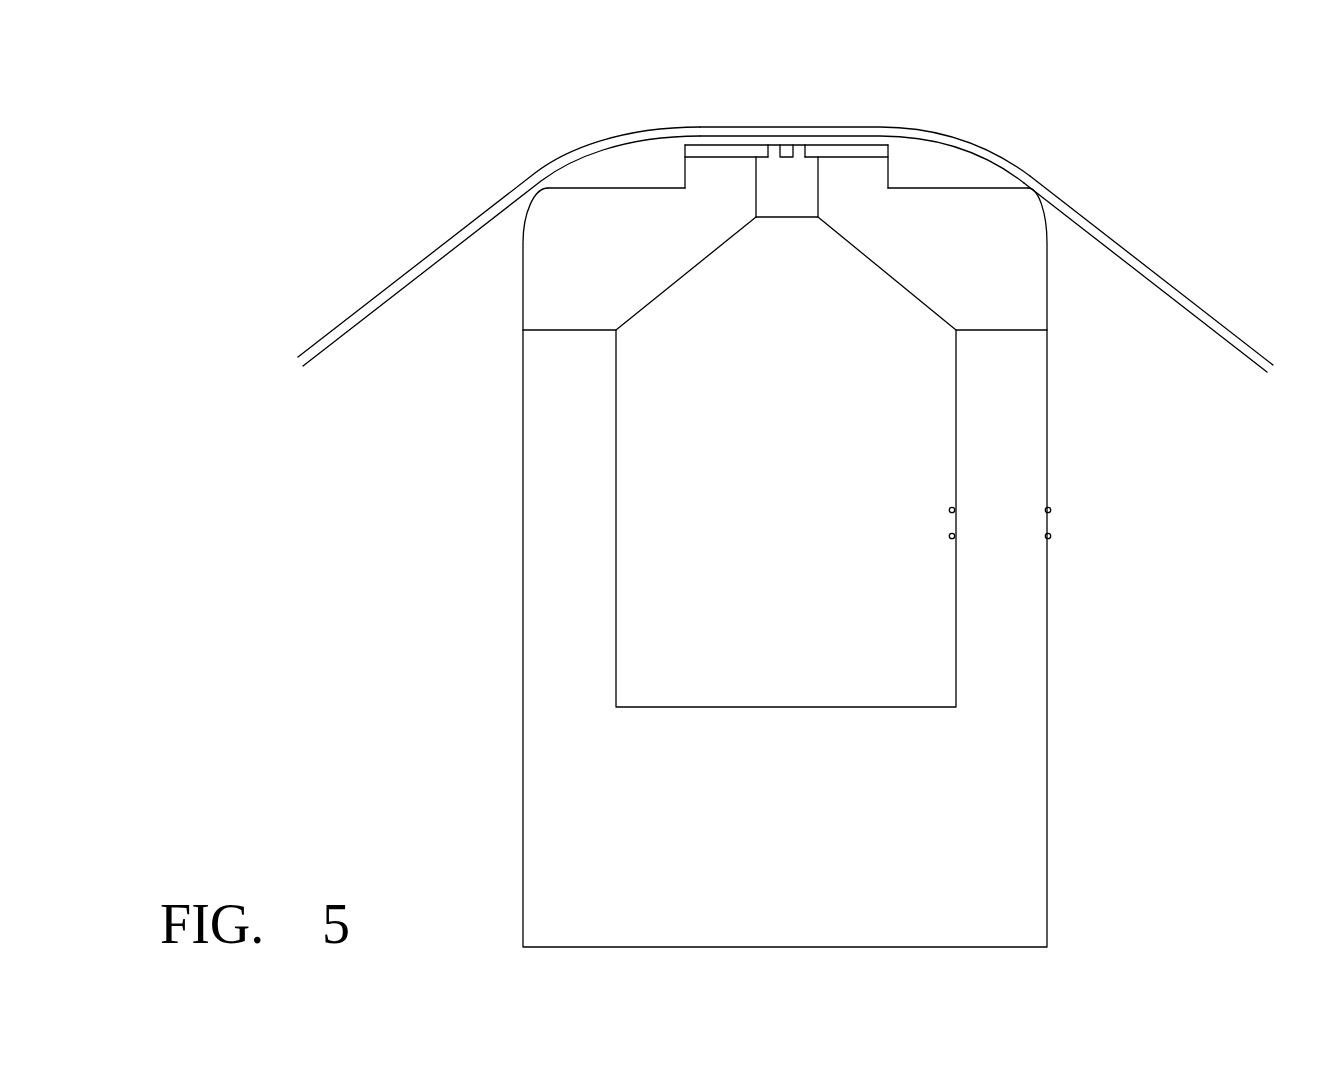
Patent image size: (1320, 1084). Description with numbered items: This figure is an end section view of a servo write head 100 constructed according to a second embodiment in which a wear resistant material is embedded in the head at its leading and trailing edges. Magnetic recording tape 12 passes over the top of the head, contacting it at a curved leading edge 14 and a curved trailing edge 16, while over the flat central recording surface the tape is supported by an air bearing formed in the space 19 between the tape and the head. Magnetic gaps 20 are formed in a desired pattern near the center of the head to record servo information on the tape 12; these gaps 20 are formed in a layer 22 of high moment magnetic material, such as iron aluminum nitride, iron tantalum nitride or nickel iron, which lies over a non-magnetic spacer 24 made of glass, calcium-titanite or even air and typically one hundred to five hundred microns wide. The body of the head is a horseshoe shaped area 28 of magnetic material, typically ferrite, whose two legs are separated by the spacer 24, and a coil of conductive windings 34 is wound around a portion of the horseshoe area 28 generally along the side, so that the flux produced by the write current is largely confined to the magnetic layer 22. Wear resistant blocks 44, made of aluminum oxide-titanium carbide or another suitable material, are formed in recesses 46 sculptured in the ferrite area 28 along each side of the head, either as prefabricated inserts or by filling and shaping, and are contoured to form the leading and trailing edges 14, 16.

The magnetic recording tape 12 is at (1182, 292).
The leading edge 14 is at (575, 149).
The trailing edge 16 is at (1002, 158).
The space 19 is at (723, 142).
The magnetic gaps 20 is at (800, 143).
The layer of high moment magnetic material 22 is at (835, 153).
The non-magnetic spacer 24 is at (783, 218).
The horseshoe shaped area 28 is at (905, 282).
The coil of conductive windings 34 is at (948, 509).
The wear resistant material blocks 44 is at (600, 188).
The recesses 46 is at (685, 173).
The connector assembly 100 is at (1074, 677).